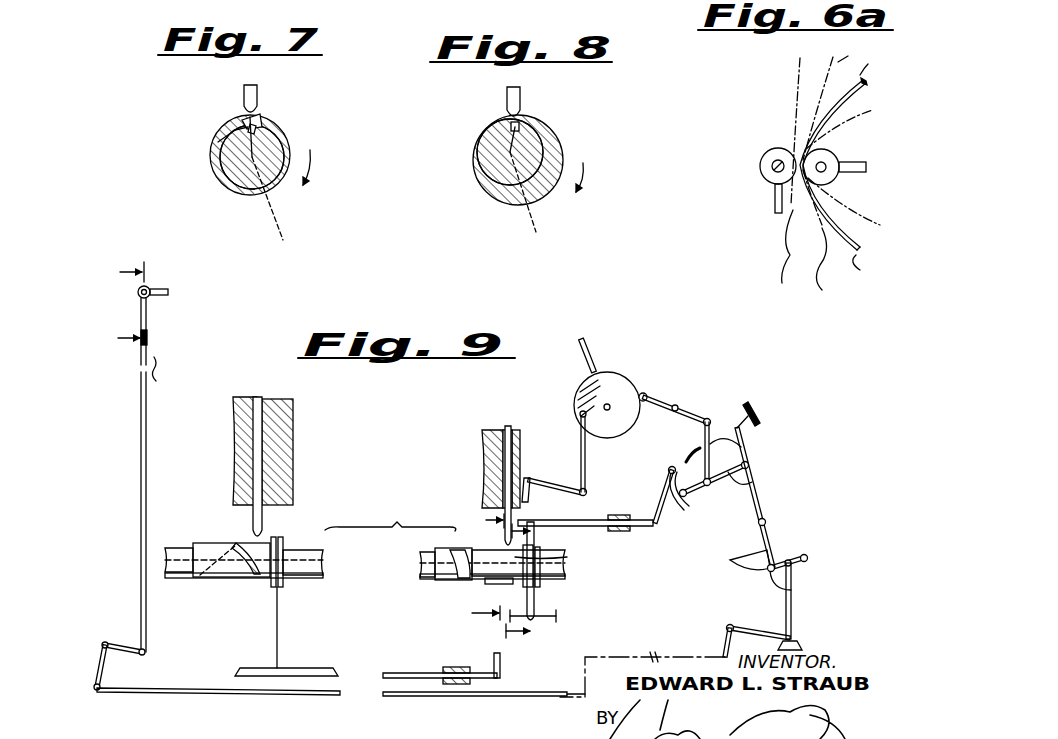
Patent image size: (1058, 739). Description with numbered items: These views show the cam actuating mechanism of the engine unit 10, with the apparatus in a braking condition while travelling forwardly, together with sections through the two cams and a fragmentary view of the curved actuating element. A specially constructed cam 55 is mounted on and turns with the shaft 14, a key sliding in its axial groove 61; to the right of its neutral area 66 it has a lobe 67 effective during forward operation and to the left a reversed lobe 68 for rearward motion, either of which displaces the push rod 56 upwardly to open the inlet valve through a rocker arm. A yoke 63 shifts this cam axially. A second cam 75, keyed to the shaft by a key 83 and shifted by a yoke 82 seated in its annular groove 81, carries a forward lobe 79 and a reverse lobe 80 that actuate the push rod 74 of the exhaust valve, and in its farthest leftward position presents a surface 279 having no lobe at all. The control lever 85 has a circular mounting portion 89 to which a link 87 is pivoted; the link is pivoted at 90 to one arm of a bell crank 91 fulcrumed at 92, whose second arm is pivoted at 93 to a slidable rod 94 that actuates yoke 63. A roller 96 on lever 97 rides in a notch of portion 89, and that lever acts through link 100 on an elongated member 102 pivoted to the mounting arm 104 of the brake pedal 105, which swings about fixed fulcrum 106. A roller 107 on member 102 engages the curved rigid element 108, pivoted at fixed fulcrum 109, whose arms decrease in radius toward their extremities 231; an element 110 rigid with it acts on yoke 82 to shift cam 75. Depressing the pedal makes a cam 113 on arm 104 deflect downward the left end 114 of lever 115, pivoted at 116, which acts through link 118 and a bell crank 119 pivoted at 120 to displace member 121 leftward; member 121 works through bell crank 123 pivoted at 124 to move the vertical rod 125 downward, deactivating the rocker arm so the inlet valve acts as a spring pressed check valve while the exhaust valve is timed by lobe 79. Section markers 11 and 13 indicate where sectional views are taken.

In FIG. 7, the cam 55 is at (300, 132).
In FIG. 9, the cam 55 is at (210, 582).
In FIG. 7, the push rod 56 is at (259, 100).
In FIG. 9, the push rod 56 is at (256, 468).
In FIG. 7, the lobe 68 is at (222, 128).
In FIG. 9, the lobe 68 is at (203, 540).
In FIG. 7, the axial groove 61 is at (222, 144).
In FIG. 7, the shaft 14 is at (238, 182).
In FIG. 8, the second cam 75 is at (563, 150).
In FIG. 9, the second cam 75 is at (460, 586).
In FIG. 8, the push rod 74 is at (522, 108).
In FIG. 9, the push rod 74 is at (516, 446).
In FIG. 8, the key 83 is at (508, 139).
In FIG. 8, the lobe 80 is at (548, 196).
In FIG. 9, the lobe 80 is at (452, 579).
In FIG. 6A, the fixed fulcrum point 109 is at (768, 179).
In FIG. 6A, the element 110 is at (776, 213).
In FIG. 6A, the roller 107 is at (832, 181).
In FIG. 6A, the elongated rod 102 is at (860, 163).
In FIG. 9, the elongated rod 102 is at (752, 480).
In FIG. 6A, the curved rigid element 108 is at (812, 130).
In FIG. 9, the curved rigid element 108 is at (677, 462).
In FIG. 6A, the extremities 231 is at (863, 165).
In FIG. 9, the vertically extending rod 125 is at (141, 613).
In FIG. 9, the section line 13 is at (117, 302).
In FIG. 9, the pivot 124 is at (147, 652).
In FIG. 9, the bell crank 123 is at (108, 673).
In FIG. 9, the member 121 is at (503, 698).
In FIG. 9, the neutral area 66 is at (229, 542).
In FIG. 9, the lobe 67 is at (286, 542).
In FIG. 9, the yoke 63 is at (279, 657).
In FIG. 9, the lobe 79 is at (510, 585).
In FIG. 9, the annular groove 81 is at (539, 616).
In FIG. 9, the yoke 82 is at (540, 566).
In FIG. 9, the surface 279 is at (520, 560).
In FIG. 9, the fulcrum location 92 is at (531, 482).
In FIG. 9, the bell crank 91 is at (570, 488).
In FIG. 9, the pivot 90 is at (588, 494).
In FIG. 9, the link 87 is at (586, 464).
In FIG. 9, the circular mounting portion 89 is at (619, 383).
In FIG. 9, the control lever 85 is at (604, 350).
In FIG. 9, the roller 96 is at (647, 395).
In FIG. 9, the lever 97 is at (699, 418).
In FIG. 9, the link 100 is at (741, 447).
In FIG. 9, the mounting arm 104 is at (758, 504).
In FIG. 9, the brake pedal 105 is at (760, 418).
In FIG. 9, the fixed fulcrum point 106 is at (766, 522).
In FIG. 9, the cam 113 is at (737, 565).
In FIG. 9, the fixed fulcrum point 116 is at (808, 562).
In FIG. 9, the lever 115 is at (808, 555).
In FIG. 9, the left end 114 is at (792, 593).
In FIG. 9, the link 118 is at (792, 618).
In FIG. 9, the bell crank 119 is at (763, 632).
In FIG. 9, the fixed fulcrum point 120 is at (727, 630).
In FIG. 9, the pivot 93 is at (501, 677).
In FIG. 9, the slidable rod 94 is at (430, 668).
In FIG. 9, the unit 10 is at (476, 575).
In FIG. 9, the section line 11 is at (533, 584).